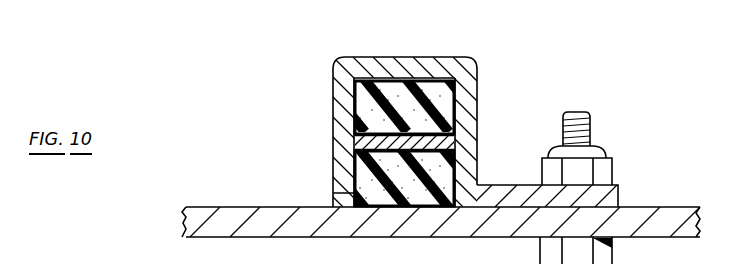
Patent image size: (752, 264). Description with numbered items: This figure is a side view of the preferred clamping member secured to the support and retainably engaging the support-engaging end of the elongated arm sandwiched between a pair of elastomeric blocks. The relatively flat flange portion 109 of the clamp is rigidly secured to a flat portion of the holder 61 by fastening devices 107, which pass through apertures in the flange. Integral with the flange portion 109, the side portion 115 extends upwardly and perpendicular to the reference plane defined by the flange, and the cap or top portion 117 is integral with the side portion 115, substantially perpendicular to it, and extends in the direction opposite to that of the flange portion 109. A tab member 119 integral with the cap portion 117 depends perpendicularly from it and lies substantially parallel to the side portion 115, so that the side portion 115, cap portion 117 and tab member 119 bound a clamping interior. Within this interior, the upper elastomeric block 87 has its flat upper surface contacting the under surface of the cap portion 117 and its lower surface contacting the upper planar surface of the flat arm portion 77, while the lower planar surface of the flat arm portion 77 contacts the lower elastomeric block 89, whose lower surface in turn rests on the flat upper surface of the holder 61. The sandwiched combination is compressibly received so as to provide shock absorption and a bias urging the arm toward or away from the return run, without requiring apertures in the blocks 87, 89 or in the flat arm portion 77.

The holder 61 is at (213, 207).
The side portion 115 is at (480, 96).
The cap or top portion 117 is at (389, 57).
The tab member 119 is at (333, 79).
The upper elastomeric block 87 is at (362, 100).
The flat arm portion 77 is at (355, 143).
The lower elastomeric block 89 is at (355, 168).
The flange portion 109 is at (509, 185).
The fastening means 107 is at (612, 168).